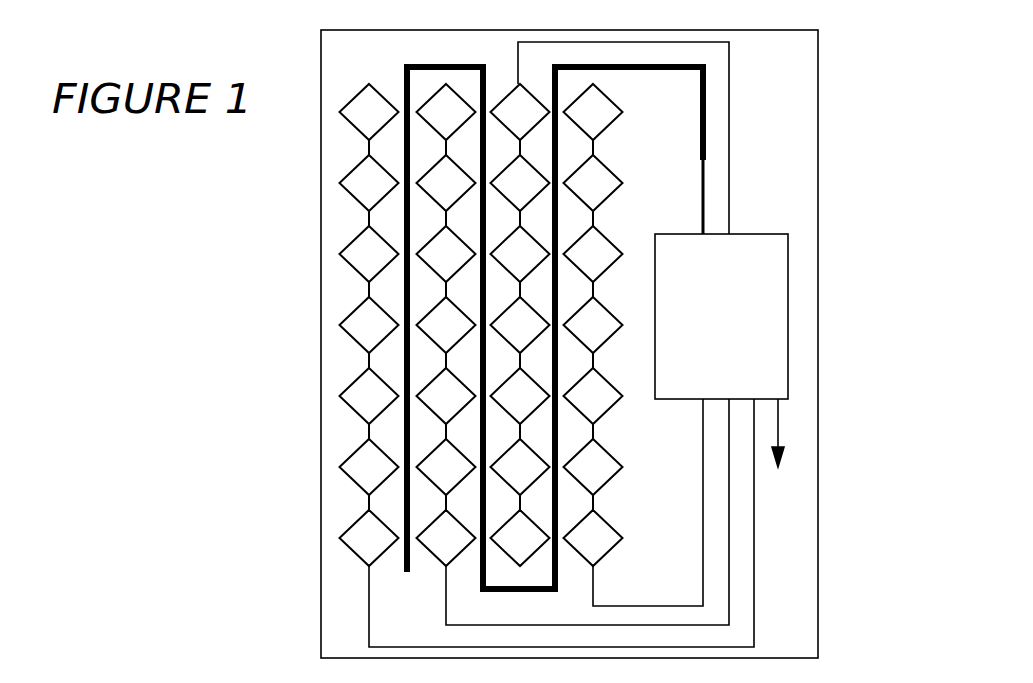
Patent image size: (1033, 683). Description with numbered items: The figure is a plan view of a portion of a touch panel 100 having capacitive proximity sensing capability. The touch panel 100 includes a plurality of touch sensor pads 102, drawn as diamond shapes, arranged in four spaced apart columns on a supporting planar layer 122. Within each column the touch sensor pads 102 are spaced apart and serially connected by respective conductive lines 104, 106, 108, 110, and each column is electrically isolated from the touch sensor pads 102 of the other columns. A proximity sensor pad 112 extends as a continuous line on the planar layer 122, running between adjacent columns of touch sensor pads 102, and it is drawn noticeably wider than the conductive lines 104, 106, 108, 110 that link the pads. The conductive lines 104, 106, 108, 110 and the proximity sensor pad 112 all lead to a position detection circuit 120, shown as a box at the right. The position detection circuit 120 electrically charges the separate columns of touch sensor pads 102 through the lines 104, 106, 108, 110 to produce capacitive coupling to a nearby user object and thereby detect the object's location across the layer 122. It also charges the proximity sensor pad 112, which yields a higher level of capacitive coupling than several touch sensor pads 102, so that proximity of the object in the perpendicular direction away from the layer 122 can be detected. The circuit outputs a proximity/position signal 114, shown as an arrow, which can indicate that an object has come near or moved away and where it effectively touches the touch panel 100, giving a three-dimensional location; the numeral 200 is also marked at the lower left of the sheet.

The touch panel 100 is at (282, 173).
The touch sensor pads 102 is at (481, 325).
The conductive line 104 is at (612, 647).
The conductive line 106 is at (493, 623).
The conductive line 108 is at (628, 42).
The conductive line 110 is at (606, 603).
The proximity sensor pad 112 is at (620, 67).
The proximity/position signal 114 is at (778, 420).
The position detection circuit 120 is at (740, 368).
The planar layer 122 is at (330, 365).
The touch sensor device 200 is at (160, 665).